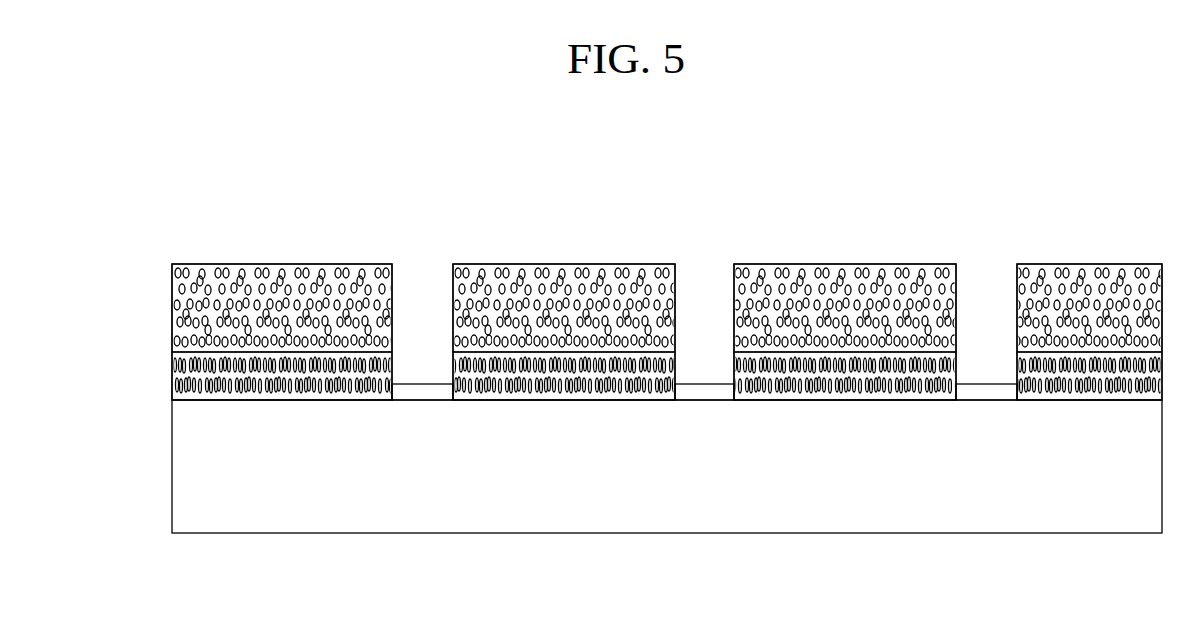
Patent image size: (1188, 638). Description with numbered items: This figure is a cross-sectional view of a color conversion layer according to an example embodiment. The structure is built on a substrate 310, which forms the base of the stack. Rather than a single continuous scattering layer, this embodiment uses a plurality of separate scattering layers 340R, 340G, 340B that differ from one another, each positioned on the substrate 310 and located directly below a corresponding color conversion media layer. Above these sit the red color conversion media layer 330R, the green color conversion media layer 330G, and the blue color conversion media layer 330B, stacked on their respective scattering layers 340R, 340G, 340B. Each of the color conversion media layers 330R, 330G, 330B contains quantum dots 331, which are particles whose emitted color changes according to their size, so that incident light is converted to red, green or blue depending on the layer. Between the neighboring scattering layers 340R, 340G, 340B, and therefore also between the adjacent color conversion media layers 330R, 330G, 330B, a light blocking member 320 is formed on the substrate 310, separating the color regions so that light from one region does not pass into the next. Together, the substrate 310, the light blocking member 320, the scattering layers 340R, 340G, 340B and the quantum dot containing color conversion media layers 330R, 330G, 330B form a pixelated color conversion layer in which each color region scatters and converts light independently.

The substrate 310 is at (158, 400).
The light blocking member 320 is at (423, 392).
The red color conversion media layer 330R is at (257, 282).
The green color conversion media layer 330G is at (533, 274).
The blue color conversion media layer 330B is at (832, 275).
The quantum dot 331 is at (352, 266).
The scattering layer 340R is at (266, 390).
The scattering layer 340G is at (560, 390).
The scattering layer 340B is at (843, 390).